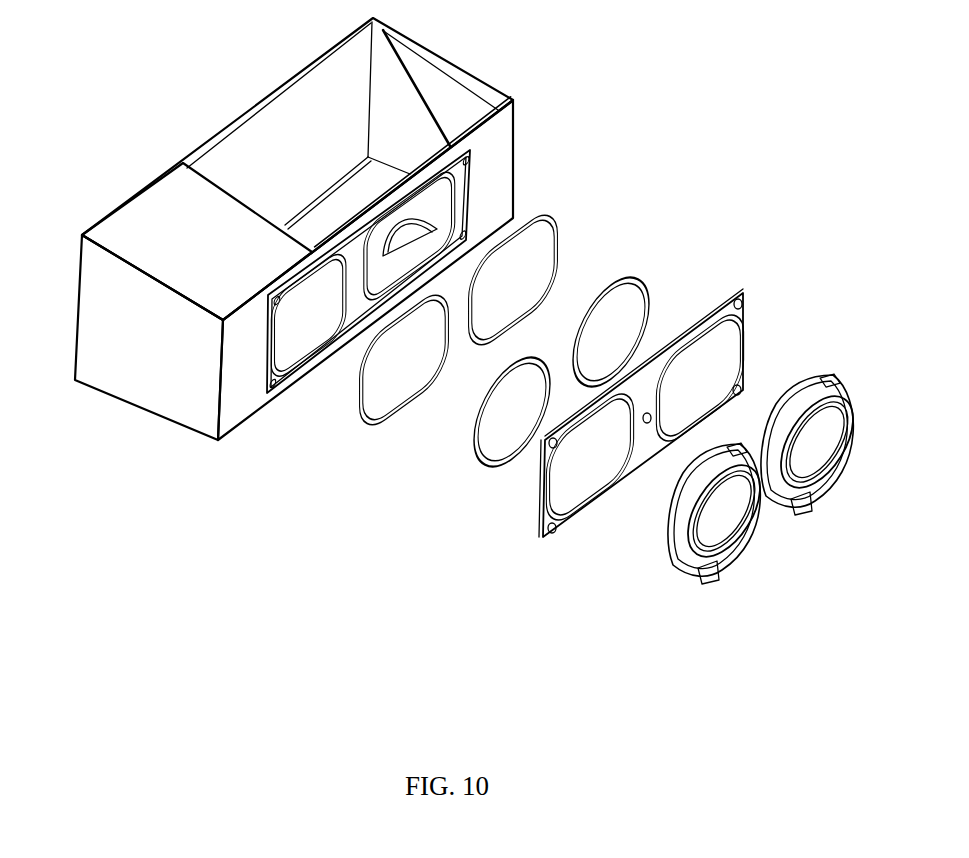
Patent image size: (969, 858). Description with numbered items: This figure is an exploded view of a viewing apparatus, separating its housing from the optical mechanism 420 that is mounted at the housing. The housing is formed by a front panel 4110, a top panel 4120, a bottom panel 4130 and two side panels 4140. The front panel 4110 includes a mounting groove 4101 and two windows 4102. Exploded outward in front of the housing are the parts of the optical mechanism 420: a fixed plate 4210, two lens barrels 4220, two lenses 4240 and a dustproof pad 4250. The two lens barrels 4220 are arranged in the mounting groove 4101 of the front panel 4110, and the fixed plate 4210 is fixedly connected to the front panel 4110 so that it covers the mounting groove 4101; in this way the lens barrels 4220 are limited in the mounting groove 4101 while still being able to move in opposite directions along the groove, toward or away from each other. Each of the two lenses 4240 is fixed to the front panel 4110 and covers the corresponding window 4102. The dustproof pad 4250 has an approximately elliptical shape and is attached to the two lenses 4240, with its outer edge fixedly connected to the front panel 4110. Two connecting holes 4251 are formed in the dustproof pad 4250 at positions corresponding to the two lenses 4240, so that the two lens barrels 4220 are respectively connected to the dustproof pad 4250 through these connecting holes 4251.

The optical mechanism 420 is at (459, 548).
The mounting groove 4101 is at (467, 213).
The windows 4102 is at (470, 173).
The front panel 4110 is at (248, 402).
The top panel 4120 is at (327, 213).
The bottom panel 4130 is at (155, 207).
The side panel 4140 is at (137, 380).
The fixed plate 4210 is at (747, 335).
The lens barrels 4220 is at (677, 567).
The lenses 4240 is at (548, 248).
The dustproof pad 4250 is at (478, 462).
The connecting holes 4251 is at (490, 424).